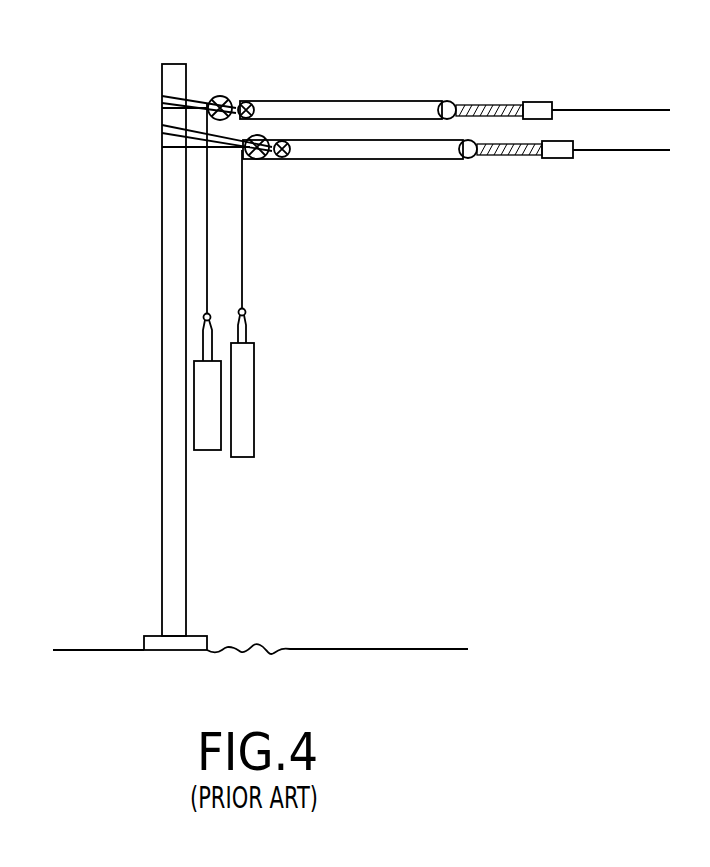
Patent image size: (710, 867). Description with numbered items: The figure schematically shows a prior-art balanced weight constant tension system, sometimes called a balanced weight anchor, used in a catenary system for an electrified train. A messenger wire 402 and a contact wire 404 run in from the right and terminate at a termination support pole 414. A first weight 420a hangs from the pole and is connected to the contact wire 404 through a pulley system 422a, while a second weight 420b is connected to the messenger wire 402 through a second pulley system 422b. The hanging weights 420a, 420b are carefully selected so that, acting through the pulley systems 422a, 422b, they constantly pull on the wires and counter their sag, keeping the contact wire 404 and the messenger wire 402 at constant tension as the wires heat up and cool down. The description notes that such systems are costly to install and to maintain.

The messenger wire 402 is at (625, 110).
The contact wire 404 is at (633, 150).
The termination support pole 414 is at (163, 322).
The first weight 420a is at (254, 444).
The second weight 420b is at (213, 450).
The pulley system 422a is at (332, 175).
The second pulley system 422b is at (289, 80).